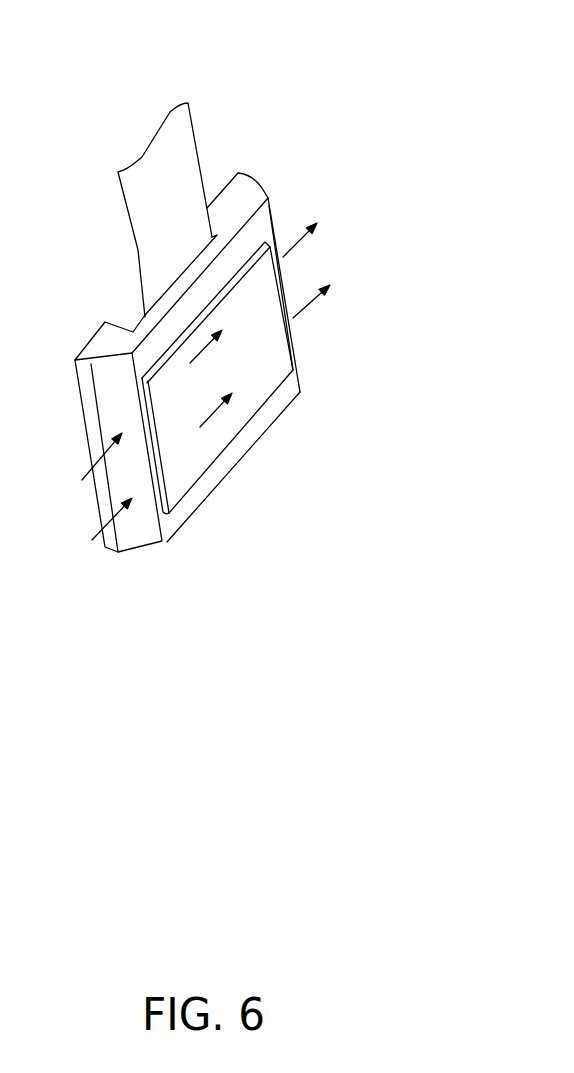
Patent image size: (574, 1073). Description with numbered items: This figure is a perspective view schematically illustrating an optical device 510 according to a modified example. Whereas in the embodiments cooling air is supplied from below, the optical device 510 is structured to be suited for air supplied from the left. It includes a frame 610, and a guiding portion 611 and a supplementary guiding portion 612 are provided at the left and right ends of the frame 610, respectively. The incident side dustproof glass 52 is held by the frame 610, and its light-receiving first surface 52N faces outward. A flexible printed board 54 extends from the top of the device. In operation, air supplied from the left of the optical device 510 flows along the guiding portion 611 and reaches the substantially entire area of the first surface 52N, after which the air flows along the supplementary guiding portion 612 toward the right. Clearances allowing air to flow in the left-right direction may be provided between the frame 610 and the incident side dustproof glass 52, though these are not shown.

The optical device 510 is at (269, 67).
The flexible printed board 54 is at (175, 130).
The frame 610 is at (101, 347).
The guiding portion 611 is at (140, 540).
The supplementary guiding portion 612 is at (287, 278).
The first surface 52N is at (280, 357).
The incident side dustproof glass 52 is at (298, 378).